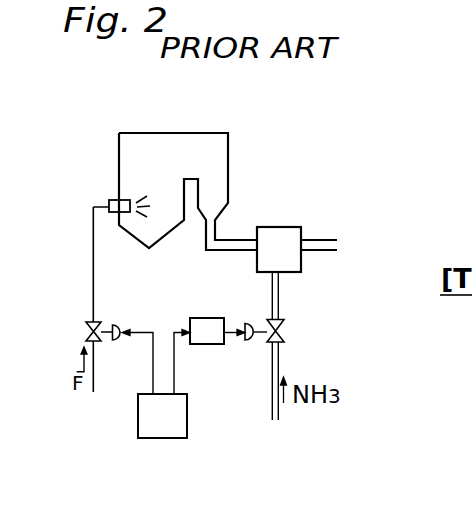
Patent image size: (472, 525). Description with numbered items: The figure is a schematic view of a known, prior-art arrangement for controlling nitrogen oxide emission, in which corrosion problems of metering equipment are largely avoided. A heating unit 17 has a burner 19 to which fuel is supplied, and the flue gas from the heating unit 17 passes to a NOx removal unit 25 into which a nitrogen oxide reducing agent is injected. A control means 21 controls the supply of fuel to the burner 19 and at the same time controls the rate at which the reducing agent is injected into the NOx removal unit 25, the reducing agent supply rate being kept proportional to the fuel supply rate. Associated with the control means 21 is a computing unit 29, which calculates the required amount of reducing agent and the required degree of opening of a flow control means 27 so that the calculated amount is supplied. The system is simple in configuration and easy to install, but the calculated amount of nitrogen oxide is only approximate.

The heating unit 17 is at (176, 133).
The burner 19 is at (109, 200).
The control means 21 is at (207, 344).
The NOx removal unit 25 is at (280, 227).
The flow control means 27 is at (250, 340).
The computing unit 29 is at (138, 425).